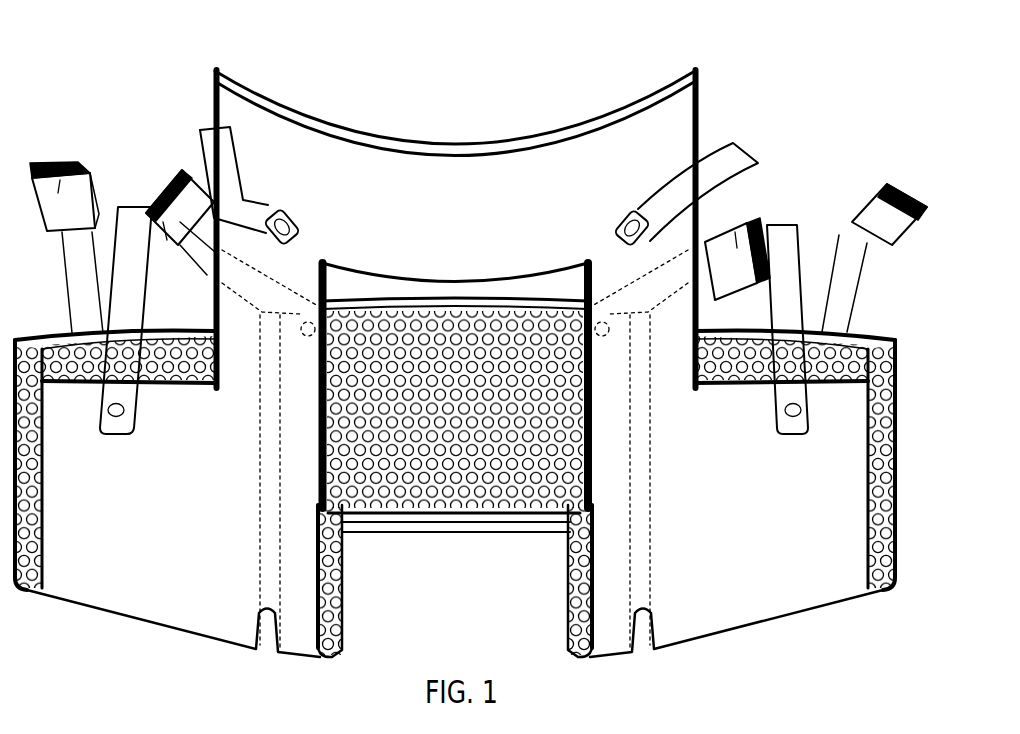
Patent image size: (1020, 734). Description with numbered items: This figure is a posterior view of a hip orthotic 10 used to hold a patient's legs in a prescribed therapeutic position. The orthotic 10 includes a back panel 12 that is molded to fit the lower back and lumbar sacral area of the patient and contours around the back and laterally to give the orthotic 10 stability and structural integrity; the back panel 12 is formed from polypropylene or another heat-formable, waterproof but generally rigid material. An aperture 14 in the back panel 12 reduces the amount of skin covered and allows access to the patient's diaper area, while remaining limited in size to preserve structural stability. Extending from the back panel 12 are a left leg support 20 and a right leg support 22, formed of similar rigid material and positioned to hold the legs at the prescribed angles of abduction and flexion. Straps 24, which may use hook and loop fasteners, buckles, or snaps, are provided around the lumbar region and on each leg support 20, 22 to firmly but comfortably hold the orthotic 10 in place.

The hip orthotic 10 is at (122, 86).
The back panel 12 is at (418, 192).
The aperture 14 is at (340, 570).
The left leg support 20 is at (123, 614).
The right leg support 22 is at (763, 617).
The straps 24 is at (53, 172).